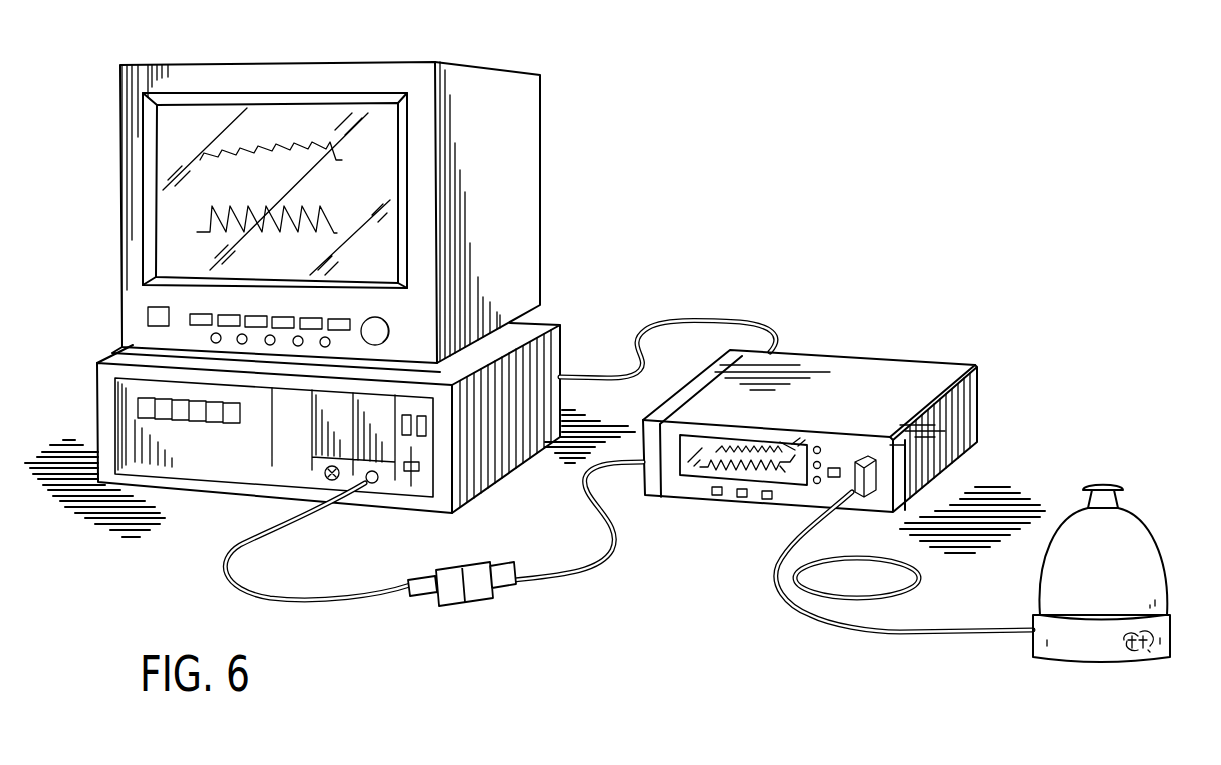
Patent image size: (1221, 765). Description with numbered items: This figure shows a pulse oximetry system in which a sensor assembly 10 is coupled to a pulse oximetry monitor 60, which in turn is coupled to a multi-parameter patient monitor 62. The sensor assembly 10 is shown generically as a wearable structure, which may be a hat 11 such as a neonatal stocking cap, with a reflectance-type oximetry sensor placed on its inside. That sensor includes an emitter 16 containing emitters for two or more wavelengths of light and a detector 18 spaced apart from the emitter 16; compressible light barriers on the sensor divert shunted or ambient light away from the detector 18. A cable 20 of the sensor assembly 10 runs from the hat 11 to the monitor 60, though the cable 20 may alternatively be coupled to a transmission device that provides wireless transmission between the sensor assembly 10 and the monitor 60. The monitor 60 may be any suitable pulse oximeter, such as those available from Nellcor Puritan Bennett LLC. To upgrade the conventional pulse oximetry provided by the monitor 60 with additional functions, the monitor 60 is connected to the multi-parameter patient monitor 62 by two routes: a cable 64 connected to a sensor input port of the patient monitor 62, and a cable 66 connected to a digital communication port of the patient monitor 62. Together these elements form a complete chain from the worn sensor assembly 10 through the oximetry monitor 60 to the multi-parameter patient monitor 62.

The sensor assembly 10 is at (1127, 584).
The hat 11 is at (1148, 545).
The emitter 16 is at (1127, 660).
The detector 18 is at (1150, 660).
The cable 20 is at (800, 620).
The pulse oximetry monitor 60 is at (880, 356).
The multi-parameter patient monitor 62 is at (492, 73).
The cable 64 is at (555, 580).
The cable 66 is at (720, 322).